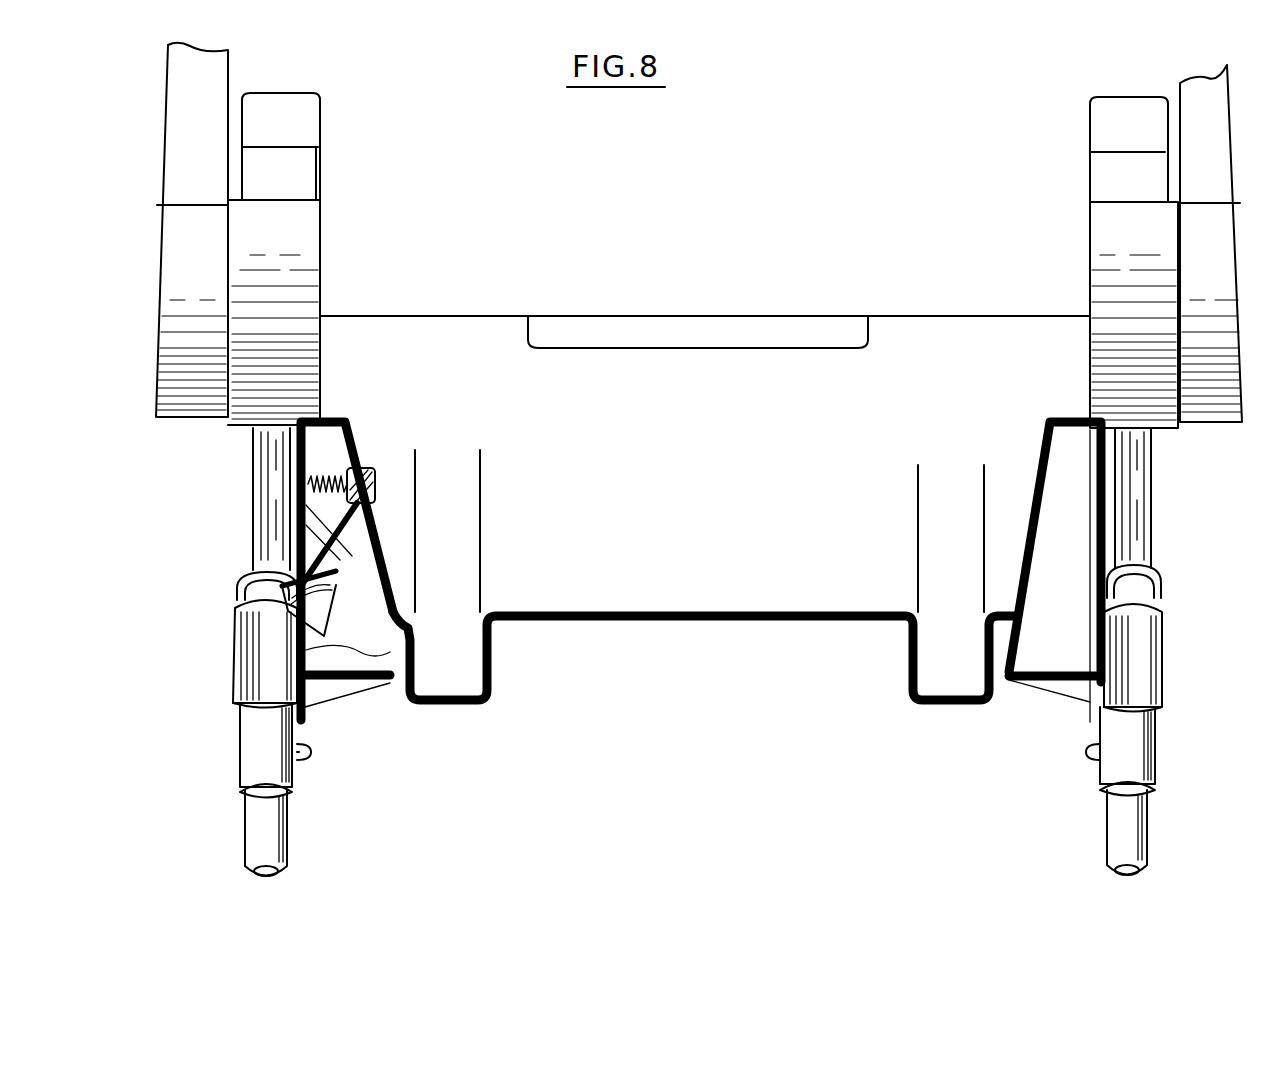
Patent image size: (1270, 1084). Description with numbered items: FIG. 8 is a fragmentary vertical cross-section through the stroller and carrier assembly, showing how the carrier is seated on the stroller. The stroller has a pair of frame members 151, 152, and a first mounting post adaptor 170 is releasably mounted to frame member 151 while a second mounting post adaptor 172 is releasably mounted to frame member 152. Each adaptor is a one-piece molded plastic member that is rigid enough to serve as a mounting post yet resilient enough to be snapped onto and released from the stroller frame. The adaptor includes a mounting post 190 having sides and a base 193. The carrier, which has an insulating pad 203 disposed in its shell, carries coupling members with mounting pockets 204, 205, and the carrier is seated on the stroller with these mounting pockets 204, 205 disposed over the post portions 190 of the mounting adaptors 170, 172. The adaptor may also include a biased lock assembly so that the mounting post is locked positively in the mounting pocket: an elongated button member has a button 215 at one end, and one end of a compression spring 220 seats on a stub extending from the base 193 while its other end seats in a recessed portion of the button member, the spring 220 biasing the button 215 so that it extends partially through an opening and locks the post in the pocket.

The frame member 151 is at (252, 530).
The frame member 152 is at (1138, 497).
The first mounting post adaptor 170 is at (250, 665).
The second mounting post adaptor 172 is at (1151, 675).
The mounting post 190 is at (340, 418).
The base 193 is at (392, 656).
The insulating pad 203 is at (687, 621).
The mounting pocket 204 is at (295, 477).
The mounting pocket 205 is at (1040, 510).
The button 215 is at (287, 620).
The compression spring 220 is at (330, 484).